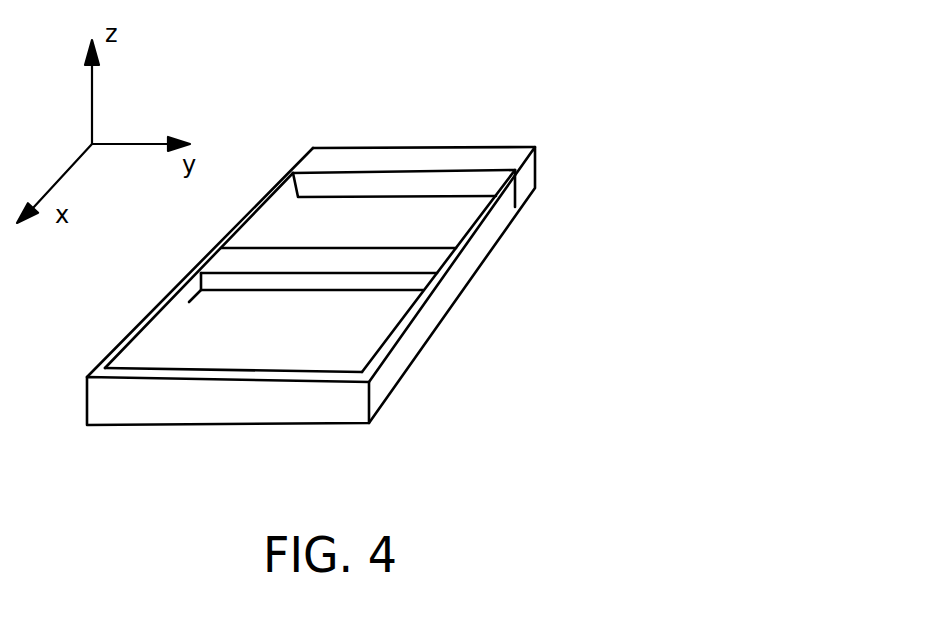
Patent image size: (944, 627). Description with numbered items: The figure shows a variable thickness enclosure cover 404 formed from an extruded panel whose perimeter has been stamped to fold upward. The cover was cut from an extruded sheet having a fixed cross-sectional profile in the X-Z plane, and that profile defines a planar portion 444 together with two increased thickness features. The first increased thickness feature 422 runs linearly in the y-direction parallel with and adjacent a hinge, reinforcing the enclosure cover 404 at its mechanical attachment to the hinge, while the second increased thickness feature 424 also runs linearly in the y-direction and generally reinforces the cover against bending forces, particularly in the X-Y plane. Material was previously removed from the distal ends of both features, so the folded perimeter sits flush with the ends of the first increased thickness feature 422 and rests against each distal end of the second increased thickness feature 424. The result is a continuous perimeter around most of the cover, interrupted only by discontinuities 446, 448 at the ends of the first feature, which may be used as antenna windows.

The variable thickness enclosure cover 404 is at (567, 93).
The first increased thickness feature 422 is at (453, 160).
The second increased thickness feature 424 is at (297, 260).
The planar portion 444 is at (297, 348).
The discontinuity 446 is at (517, 207).
The discontinuity 448 is at (313, 178).